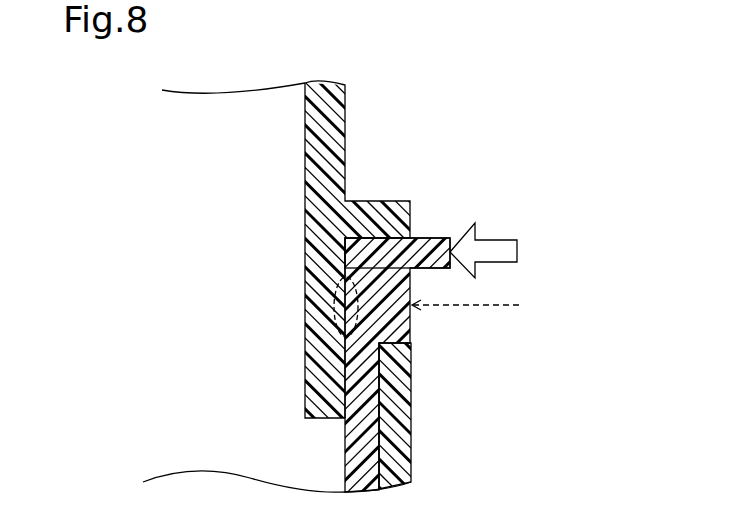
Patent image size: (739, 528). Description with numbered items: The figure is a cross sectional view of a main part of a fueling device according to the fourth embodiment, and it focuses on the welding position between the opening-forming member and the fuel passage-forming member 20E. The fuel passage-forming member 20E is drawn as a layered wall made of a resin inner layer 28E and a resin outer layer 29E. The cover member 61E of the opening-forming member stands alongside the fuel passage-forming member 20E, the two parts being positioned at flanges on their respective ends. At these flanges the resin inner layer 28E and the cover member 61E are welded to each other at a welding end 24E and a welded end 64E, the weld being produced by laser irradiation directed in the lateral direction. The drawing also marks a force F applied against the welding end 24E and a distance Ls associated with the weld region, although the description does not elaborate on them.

The cover member 61E is at (347, 106).
The fuel passage-forming member 20E is at (412, 405).
The welding end 24E is at (428, 238).
The welded end 64E is at (347, 333).
The resin inner layer 28E is at (370, 427).
The resin outer layer 29E is at (411, 463).
The force F is at (497, 238).
The distance Ls is at (478, 305).